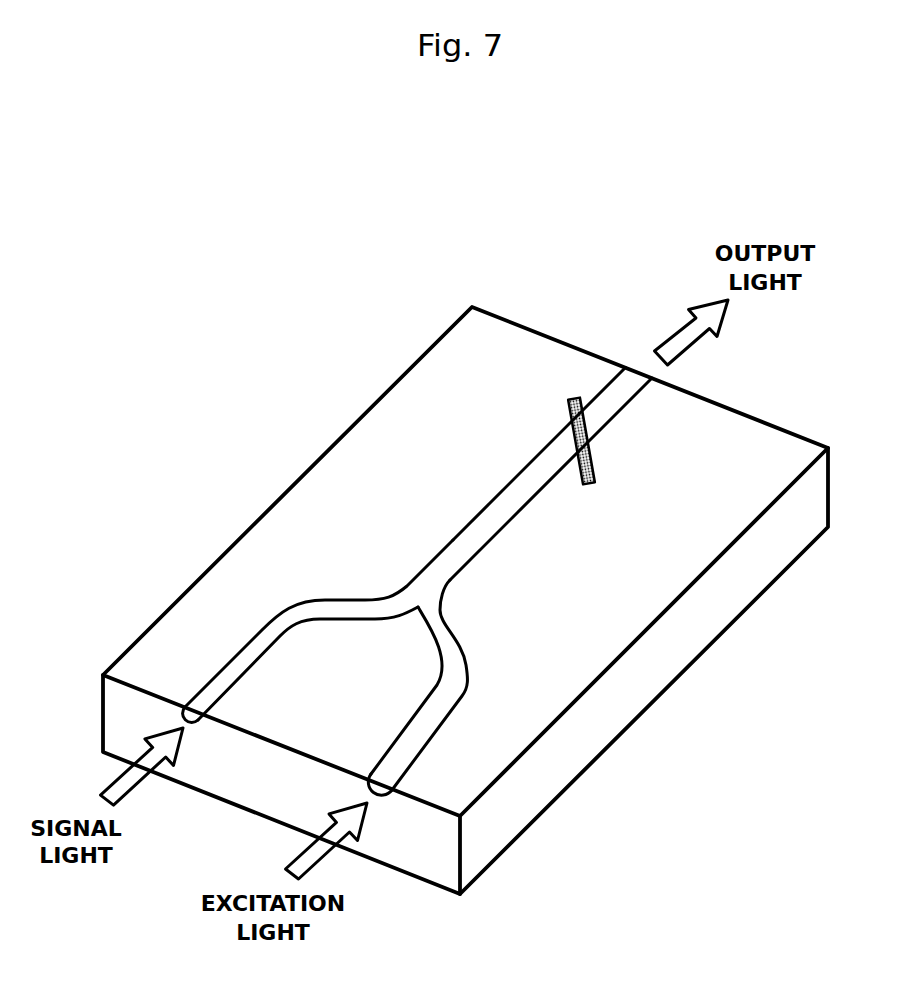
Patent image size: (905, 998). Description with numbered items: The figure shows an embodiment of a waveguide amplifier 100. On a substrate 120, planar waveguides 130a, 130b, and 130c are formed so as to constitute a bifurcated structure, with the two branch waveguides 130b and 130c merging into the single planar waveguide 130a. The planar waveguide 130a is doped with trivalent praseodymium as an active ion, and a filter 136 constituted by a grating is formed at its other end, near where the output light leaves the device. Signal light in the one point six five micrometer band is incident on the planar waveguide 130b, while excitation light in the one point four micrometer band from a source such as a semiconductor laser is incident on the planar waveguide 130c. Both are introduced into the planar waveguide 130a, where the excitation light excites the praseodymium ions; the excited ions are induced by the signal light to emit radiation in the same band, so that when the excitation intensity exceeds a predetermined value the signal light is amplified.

The waveguide amplifier 100 is at (489, 296).
The substrate 120 is at (743, 615).
The planar waveguide 130a is at (477, 557).
The planar waveguide 130b is at (250, 668).
The planar waveguide 130c is at (460, 715).
The filter 136 is at (598, 461).